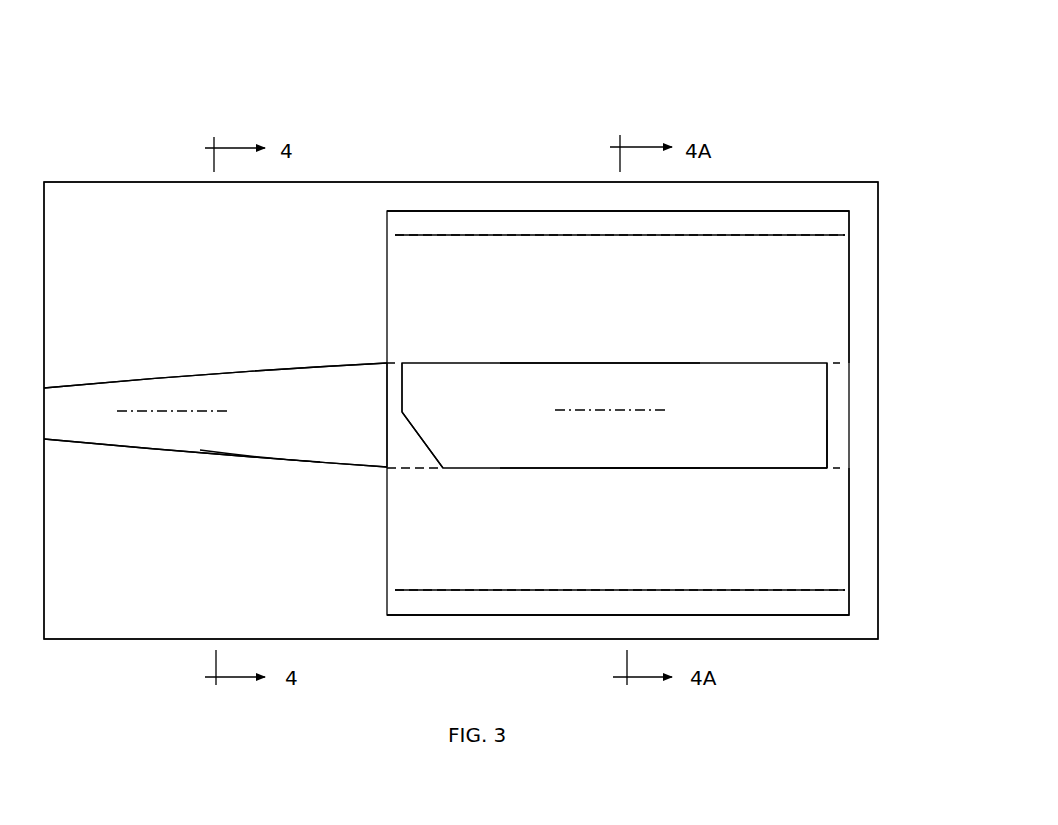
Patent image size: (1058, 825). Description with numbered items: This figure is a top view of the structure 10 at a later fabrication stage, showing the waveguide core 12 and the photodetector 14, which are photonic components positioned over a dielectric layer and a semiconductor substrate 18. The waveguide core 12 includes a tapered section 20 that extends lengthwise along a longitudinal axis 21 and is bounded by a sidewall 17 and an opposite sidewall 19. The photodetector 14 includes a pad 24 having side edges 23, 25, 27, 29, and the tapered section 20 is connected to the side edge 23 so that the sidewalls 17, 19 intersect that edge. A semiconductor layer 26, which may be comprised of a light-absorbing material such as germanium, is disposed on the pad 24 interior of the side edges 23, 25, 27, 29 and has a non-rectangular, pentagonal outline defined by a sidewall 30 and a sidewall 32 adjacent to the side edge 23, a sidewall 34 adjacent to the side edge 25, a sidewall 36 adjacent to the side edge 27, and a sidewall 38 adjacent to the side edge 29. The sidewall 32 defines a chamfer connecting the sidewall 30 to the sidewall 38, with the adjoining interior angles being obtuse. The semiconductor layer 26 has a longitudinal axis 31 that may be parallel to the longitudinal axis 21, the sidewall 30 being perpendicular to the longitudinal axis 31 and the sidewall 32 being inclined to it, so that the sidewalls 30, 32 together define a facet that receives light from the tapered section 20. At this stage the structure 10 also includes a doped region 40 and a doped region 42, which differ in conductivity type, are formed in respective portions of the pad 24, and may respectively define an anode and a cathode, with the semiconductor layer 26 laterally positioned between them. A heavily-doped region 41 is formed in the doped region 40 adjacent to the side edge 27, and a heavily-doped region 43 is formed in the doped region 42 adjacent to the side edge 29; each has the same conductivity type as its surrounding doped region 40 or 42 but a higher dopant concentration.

The structure 10 is at (138, 128).
The waveguide core 12 is at (172, 355).
The photodetector 14 is at (358, 255).
The sidewall 17 is at (238, 373).
The semiconductor substrate 18 is at (116, 600).
The sidewall 19 is at (215, 452).
The tapered section 20 is at (267, 435).
The longitudinal axis 21 is at (172, 412).
The side edge 23 is at (390, 423).
The pad 24 is at (840, 422).
The side edge 25 is at (848, 395).
The semiconductor layer 26 is at (647, 433).
The side edge 27 is at (658, 211).
The side edge 29 is at (610, 615).
The sidewall 30 is at (402, 376).
The longitudinal axis 31 is at (580, 408).
The sidewall 32 is at (422, 437).
The sidewall 34 is at (827, 445).
The sidewall 36 is at (583, 363).
The sidewall 38 is at (583, 470).
The doped region 40 is at (792, 300).
The heavily-doped region 41 is at (788, 228).
The doped region 42 is at (798, 537).
The heavily-doped region 43 is at (805, 604).